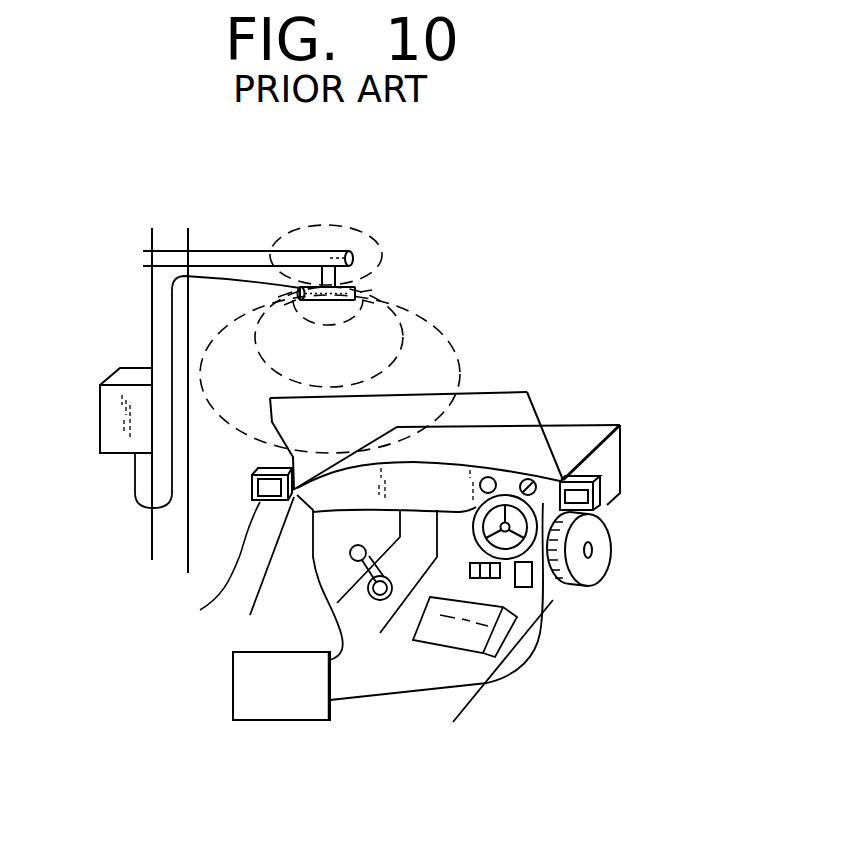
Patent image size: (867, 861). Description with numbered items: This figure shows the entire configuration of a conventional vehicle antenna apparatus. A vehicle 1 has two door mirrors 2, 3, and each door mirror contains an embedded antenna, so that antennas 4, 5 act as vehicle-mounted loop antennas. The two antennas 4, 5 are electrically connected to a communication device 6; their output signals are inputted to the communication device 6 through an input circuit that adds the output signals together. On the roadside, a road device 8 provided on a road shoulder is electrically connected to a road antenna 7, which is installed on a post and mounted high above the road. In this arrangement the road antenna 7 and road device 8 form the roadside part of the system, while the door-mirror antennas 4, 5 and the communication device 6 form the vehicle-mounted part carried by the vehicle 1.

The vehicle 1 is at (622, 455).
The door mirror 2 is at (597, 493).
The door mirror 3 is at (252, 487).
The antenna 4 is at (600, 508).
The antenna 5 is at (200, 610).
The communication device 6 is at (290, 710).
The road antenna 7 is at (358, 291).
The road device 8 is at (117, 405).